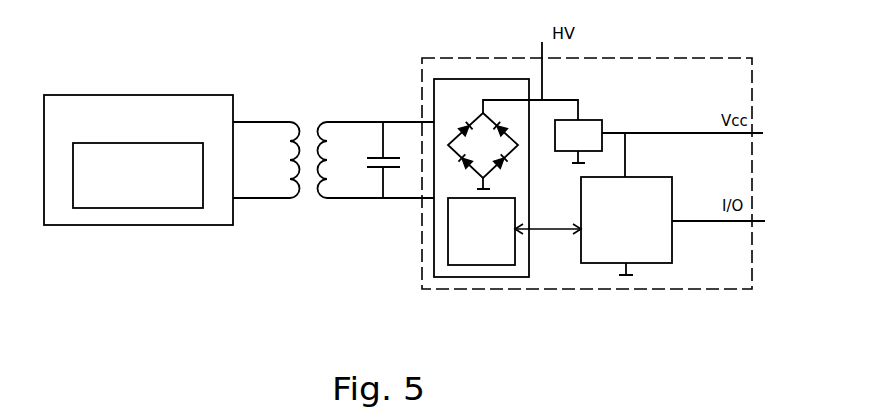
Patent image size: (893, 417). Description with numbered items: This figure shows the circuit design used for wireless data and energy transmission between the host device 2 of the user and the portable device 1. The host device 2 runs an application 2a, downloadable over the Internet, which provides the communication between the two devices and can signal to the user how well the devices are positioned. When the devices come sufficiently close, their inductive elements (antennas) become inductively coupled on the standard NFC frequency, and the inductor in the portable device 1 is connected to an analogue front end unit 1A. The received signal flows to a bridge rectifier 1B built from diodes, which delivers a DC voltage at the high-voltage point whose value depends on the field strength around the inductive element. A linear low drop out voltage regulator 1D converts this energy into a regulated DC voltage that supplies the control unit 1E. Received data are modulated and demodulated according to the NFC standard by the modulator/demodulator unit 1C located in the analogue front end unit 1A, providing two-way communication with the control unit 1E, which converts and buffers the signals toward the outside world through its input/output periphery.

The portable device 1 is at (642, 90).
The analogue front end unit 1A is at (481, 178).
The bridge rectifier 1B is at (513, 115).
The modulator/demodulator unit 1C is at (481, 231).
The LDO unit 1D is at (578, 141).
The control unit 1E is at (626, 226).
The host device 2 is at (82, 107).
The application 2a is at (112, 197).